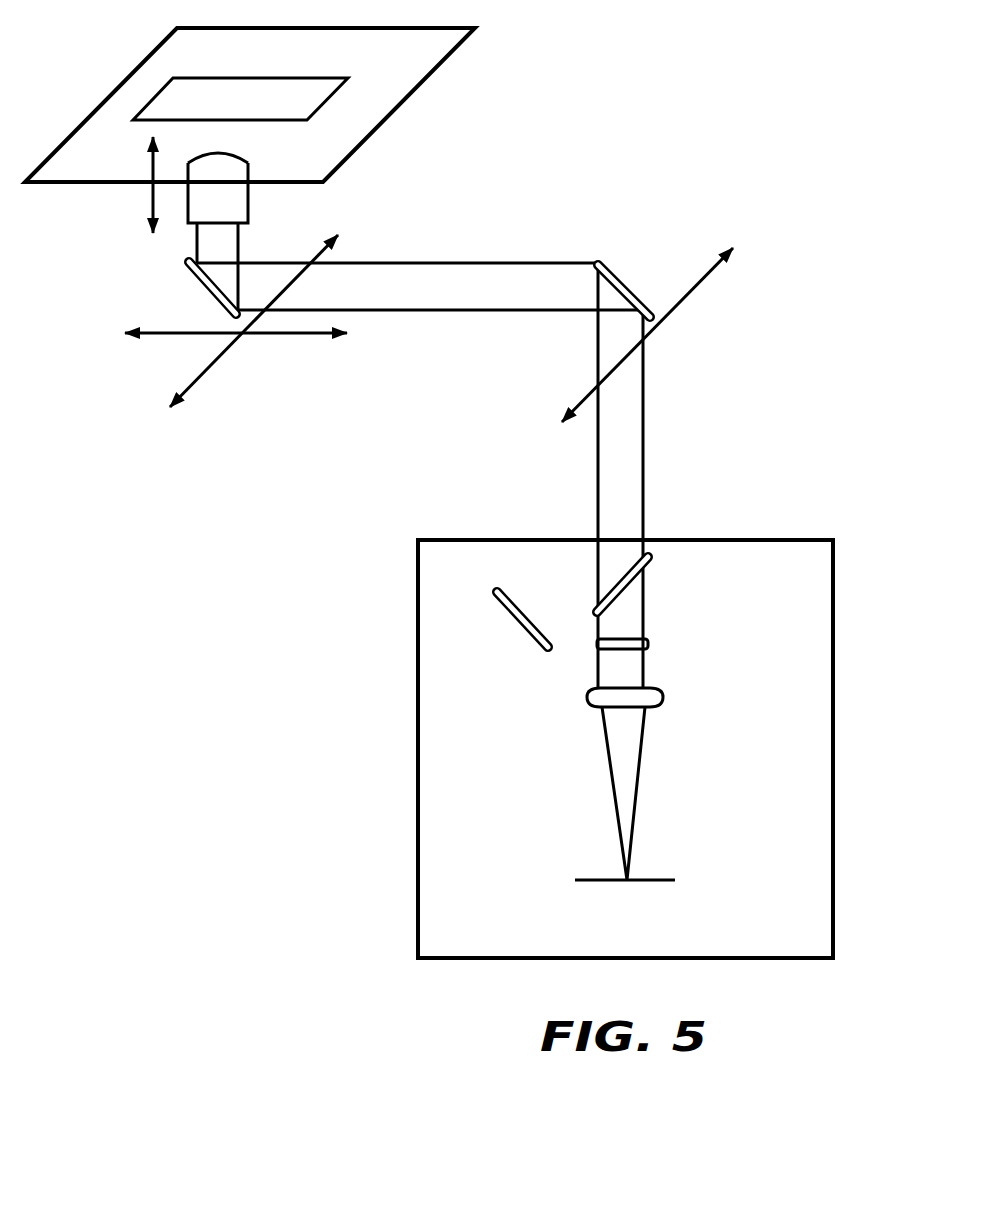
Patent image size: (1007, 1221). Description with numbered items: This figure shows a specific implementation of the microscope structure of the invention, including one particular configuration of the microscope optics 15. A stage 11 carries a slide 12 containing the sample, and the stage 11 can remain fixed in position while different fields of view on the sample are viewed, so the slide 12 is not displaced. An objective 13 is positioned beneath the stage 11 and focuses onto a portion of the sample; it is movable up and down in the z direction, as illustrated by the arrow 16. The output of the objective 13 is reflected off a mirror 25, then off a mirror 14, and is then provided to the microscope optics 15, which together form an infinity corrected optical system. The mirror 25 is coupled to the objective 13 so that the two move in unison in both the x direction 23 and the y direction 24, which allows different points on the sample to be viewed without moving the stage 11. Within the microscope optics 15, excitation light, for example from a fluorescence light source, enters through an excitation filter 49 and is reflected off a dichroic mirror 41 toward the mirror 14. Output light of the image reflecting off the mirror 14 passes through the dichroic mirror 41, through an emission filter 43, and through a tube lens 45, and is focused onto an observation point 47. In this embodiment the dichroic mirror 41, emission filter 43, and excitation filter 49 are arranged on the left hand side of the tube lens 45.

The stage 11 is at (433, 60).
The slide 12 is at (320, 88).
The objective 13 is at (247, 192).
The mirror 14 is at (622, 290).
The microscope optics 15 is at (833, 752).
The arrow 16 is at (152, 196).
The x direction 23 is at (307, 337).
The y direction 24 is at (202, 377).
The mirror 25 is at (207, 290).
The dichroic mirror 41 is at (652, 557).
The emission filter 43 is at (650, 648).
The tube lens 45 is at (665, 697).
The observation point 47 is at (667, 882).
The excitation filter 49 is at (518, 623).